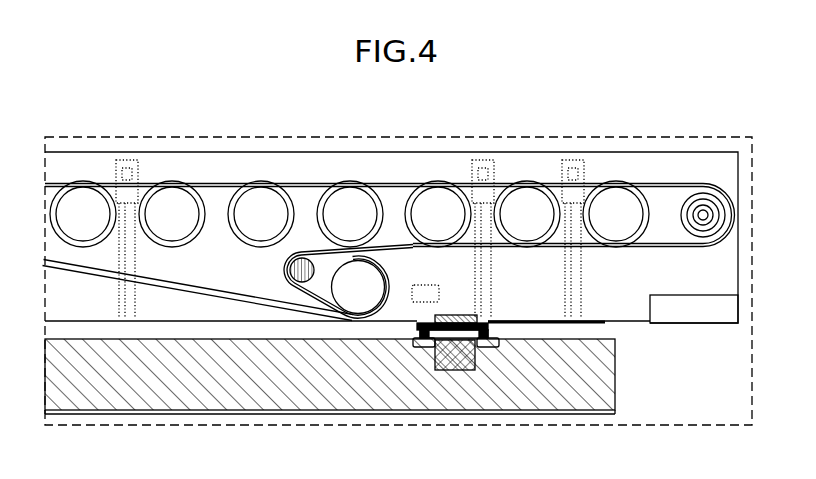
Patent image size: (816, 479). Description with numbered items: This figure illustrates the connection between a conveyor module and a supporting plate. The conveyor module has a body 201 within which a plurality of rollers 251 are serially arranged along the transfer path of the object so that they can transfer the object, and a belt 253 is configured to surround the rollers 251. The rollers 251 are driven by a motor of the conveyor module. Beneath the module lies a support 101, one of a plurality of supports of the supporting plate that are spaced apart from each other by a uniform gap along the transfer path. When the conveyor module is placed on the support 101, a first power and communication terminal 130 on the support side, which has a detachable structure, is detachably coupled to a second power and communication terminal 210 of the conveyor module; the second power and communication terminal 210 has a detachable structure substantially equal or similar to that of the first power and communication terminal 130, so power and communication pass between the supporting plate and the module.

The body 201 is at (404, 160).
The roller 251 is at (527, 190).
The belt 253 is at (661, 186).
The first power and communication terminal 130 is at (441, 371).
The second power and communication terminal 210 is at (479, 347).
The support 101 is at (552, 400).